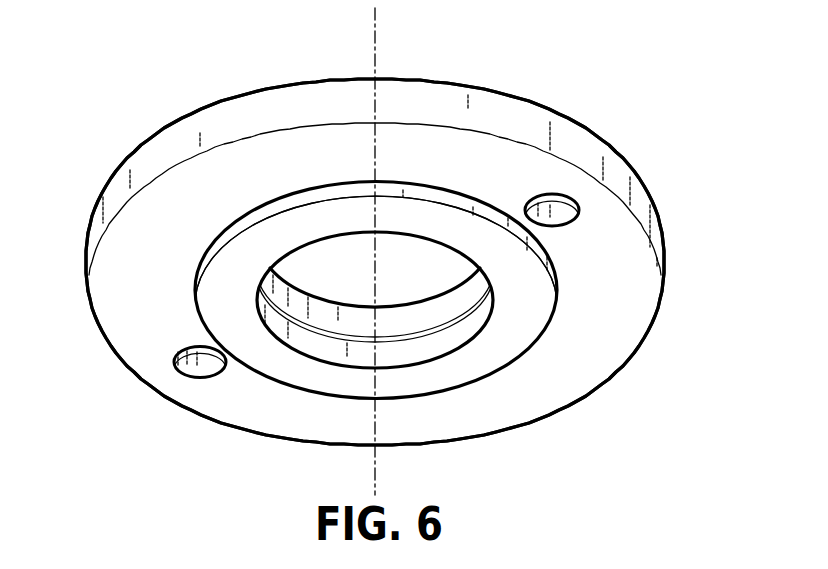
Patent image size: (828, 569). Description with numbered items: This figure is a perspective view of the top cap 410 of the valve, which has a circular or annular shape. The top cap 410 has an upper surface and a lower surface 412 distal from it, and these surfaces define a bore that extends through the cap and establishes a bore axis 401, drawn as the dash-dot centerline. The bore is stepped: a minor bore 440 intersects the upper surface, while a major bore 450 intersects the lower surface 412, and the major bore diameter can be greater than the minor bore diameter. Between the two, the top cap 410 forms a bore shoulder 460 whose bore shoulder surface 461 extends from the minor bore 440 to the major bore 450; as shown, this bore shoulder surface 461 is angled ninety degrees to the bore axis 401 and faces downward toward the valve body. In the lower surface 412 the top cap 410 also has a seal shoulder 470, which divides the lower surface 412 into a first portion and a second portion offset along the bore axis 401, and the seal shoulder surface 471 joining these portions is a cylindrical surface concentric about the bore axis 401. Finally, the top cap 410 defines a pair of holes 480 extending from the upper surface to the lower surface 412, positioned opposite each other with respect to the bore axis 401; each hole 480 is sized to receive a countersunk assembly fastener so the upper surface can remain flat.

The bore axis 401 is at (374, 52).
The top cap 410 is at (586, 94).
The lower surface 412 is at (628, 310).
The minor bore 440 is at (434, 312).
The major bore 450 is at (417, 355).
The bore shoulder 460 is at (305, 333).
The bore shoulder surface 461 is at (375, 315).
The seal shoulder 470 is at (455, 202).
The seal shoulder surface 471 is at (375, 246).
The hole 480 is at (553, 212).